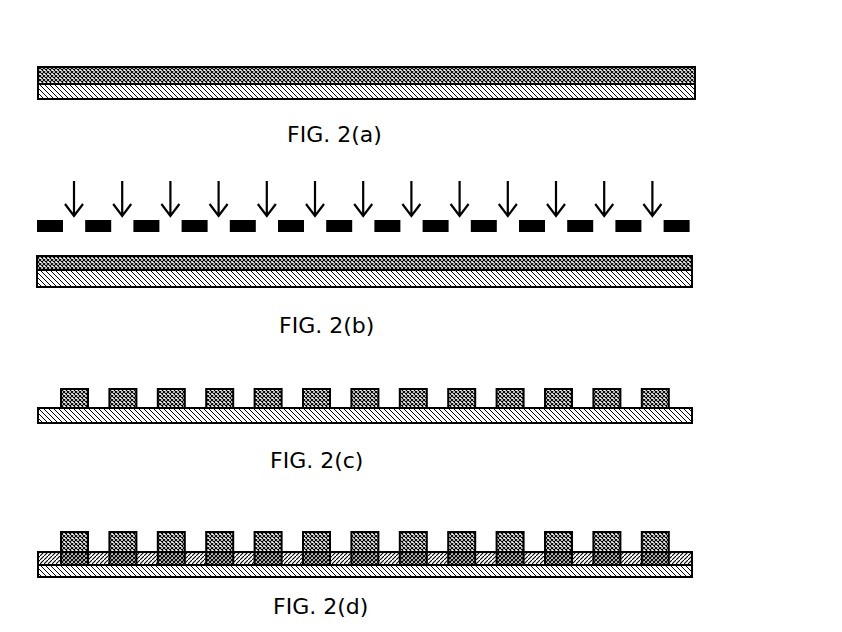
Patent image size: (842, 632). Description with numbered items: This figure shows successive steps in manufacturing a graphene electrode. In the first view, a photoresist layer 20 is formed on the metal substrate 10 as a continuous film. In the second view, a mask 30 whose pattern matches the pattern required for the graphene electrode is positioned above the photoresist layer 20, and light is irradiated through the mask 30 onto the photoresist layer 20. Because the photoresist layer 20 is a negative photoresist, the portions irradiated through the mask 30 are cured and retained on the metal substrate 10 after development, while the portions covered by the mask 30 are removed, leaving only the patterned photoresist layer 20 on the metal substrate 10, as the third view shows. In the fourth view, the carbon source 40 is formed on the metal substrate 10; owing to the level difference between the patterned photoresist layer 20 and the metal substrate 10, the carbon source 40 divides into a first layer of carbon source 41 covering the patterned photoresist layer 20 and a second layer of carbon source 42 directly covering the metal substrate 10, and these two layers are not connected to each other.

In FIG. 2A, the metal substrate 10 is at (697, 88).
In FIG. 2B, the metal substrate 10 is at (693, 277).
In FIG. 2C, the metal substrate 10 is at (678, 408).
In FIG. 2D, the metal substrate 10 is at (693, 563).
In FIG. 2A, the photoresist layer 20 is at (677, 68).
In FIG. 2B, the photoresist layer 20 is at (677, 256).
In FIG. 2C, the photoresist layer 20 is at (665, 389).
In FIG. 2D, the photoresist layer 20 is at (413, 541).
In FIG. 2B, the mask 30 is at (677, 220).
In FIG. 2D, the carbon source 40 is at (413, 514).
In FIG. 2D, the first layer of carbon source 41 is at (318, 532).
In FIG. 2D, the second layer of carbon source 42 is at (429, 549).